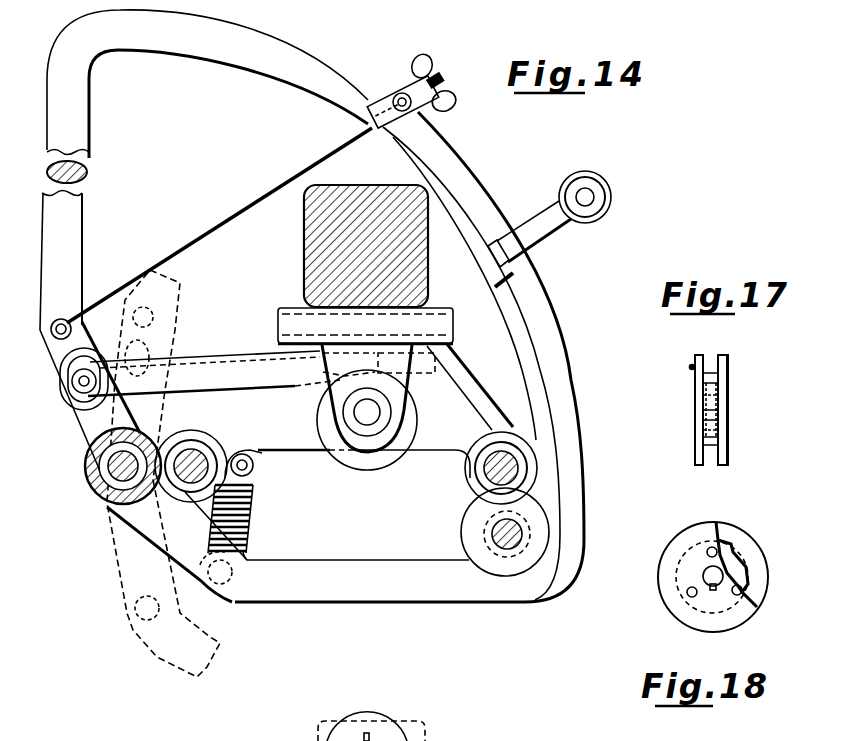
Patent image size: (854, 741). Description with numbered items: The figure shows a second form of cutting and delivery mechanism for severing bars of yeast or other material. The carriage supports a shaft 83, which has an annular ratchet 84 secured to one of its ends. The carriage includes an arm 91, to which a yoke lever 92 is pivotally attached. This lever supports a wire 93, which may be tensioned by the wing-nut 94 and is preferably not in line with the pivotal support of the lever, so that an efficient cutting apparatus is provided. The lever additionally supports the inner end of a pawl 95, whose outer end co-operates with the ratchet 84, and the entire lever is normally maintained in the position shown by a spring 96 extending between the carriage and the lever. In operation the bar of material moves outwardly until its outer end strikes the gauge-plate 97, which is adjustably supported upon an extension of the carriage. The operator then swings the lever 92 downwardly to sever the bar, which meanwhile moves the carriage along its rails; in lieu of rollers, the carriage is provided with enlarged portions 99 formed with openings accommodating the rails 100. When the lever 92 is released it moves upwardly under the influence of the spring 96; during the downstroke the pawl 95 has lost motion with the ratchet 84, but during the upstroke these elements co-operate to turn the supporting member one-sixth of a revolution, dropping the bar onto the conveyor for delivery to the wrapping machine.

In FIG. 14, the shaft 83 is at (366, 422).
In FIG. 14, the annular ratchet 84 is at (333, 410).
In FIG. 17, the annular ratchet 84 is at (703, 414).
In FIG. 18, the annular ratchet 84 is at (745, 575).
In FIG. 14, the arm 91 is at (162, 432).
In FIG. 14, the yoke lever 92 is at (72, 250).
In FIG. 14, the wire 93 is at (283, 184).
In FIG. 14, the wing-nut 94 is at (409, 82).
In FIG. 14, the pawl 95 is at (233, 367).
In FIG. 14, the spring 96 is at (252, 540).
In FIG. 14, the gauge-plate 97 is at (390, 737).
In FIG. 14, the enlarged portions 99 is at (213, 452).
In FIG. 14, the rails 100 is at (188, 460).